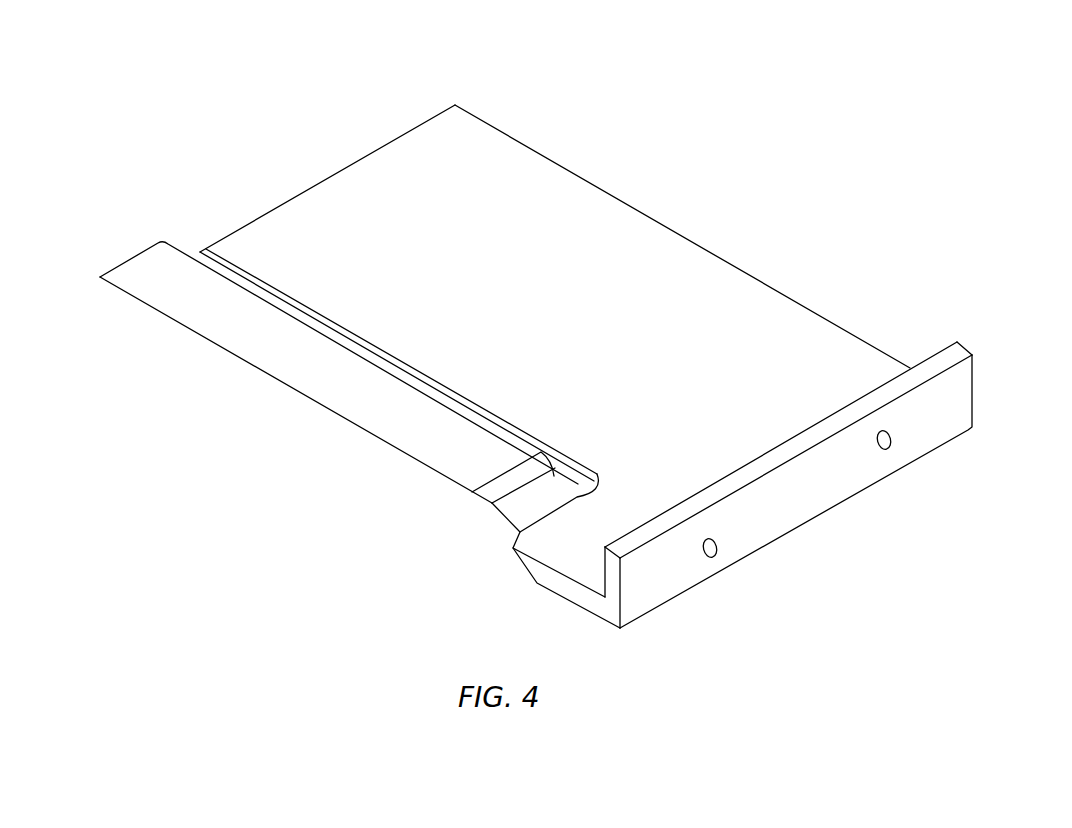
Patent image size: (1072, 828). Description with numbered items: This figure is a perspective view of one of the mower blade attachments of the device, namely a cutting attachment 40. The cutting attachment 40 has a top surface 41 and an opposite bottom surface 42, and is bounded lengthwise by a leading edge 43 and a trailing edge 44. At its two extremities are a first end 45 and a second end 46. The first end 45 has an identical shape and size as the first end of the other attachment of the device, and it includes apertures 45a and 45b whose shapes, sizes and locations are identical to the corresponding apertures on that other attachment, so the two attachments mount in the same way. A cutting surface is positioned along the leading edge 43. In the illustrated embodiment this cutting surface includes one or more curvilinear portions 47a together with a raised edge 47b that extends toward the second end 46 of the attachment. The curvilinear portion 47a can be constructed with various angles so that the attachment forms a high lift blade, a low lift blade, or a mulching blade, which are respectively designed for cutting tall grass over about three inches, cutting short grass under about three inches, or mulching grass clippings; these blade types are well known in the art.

The cutting attachment 40 is at (238, 98).
The top surface 41 is at (578, 333).
The bottom surface 42 is at (668, 604).
The leading edge 43 is at (572, 596).
The trailing edge 44 is at (682, 237).
The first end 45 is at (808, 500).
The aperture 45a is at (721, 554).
The aperture 45b is at (892, 448).
The second end 46 is at (362, 160).
The curvilinear portion 47a is at (498, 493).
The raised edge 47b is at (352, 402).